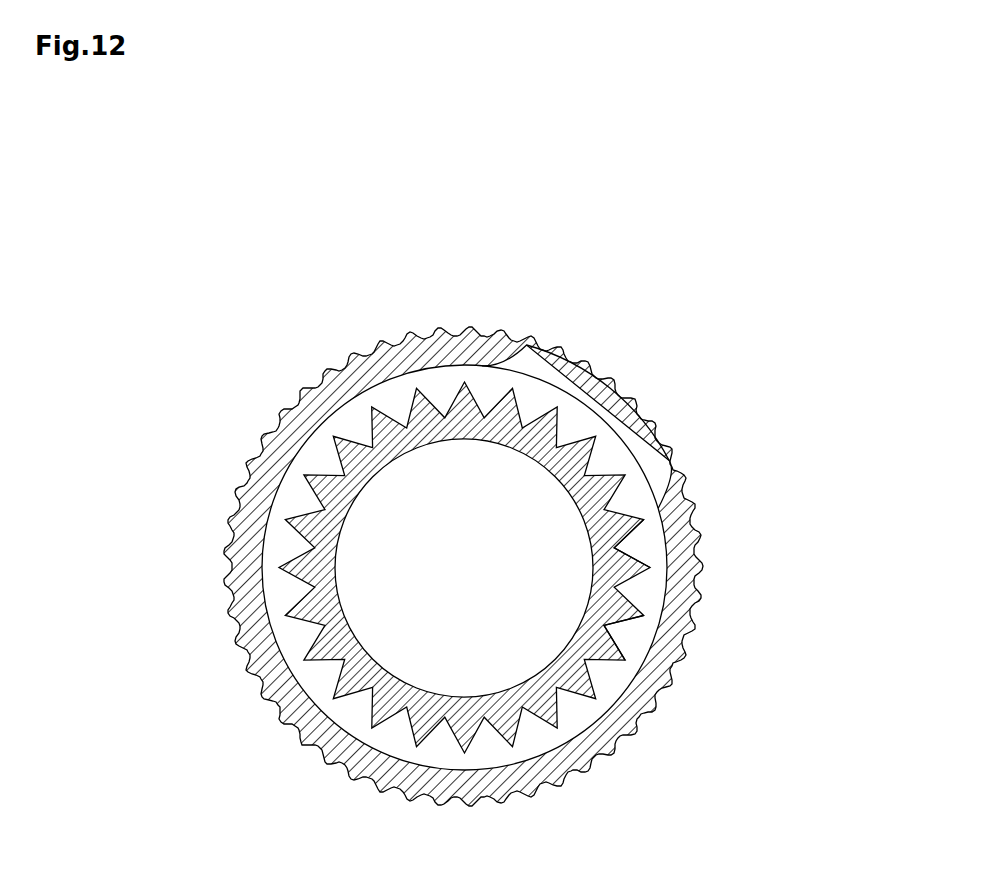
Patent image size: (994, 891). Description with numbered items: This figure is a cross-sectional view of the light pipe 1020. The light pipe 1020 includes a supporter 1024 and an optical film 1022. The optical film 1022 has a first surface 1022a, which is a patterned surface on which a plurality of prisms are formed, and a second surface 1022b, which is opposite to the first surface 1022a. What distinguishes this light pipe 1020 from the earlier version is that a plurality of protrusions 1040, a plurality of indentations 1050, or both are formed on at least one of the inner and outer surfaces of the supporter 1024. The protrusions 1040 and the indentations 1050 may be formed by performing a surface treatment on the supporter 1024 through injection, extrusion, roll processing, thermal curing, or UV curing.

The light pipe 1020 is at (769, 163).
The optical film 1022 is at (614, 587).
The first surface 1022a is at (614, 548).
The second surface 1022b is at (604, 625).
The supporter 1024 is at (668, 470).
The protrusions 1040 is at (498, 330).
The indentations 1050 is at (520, 344).